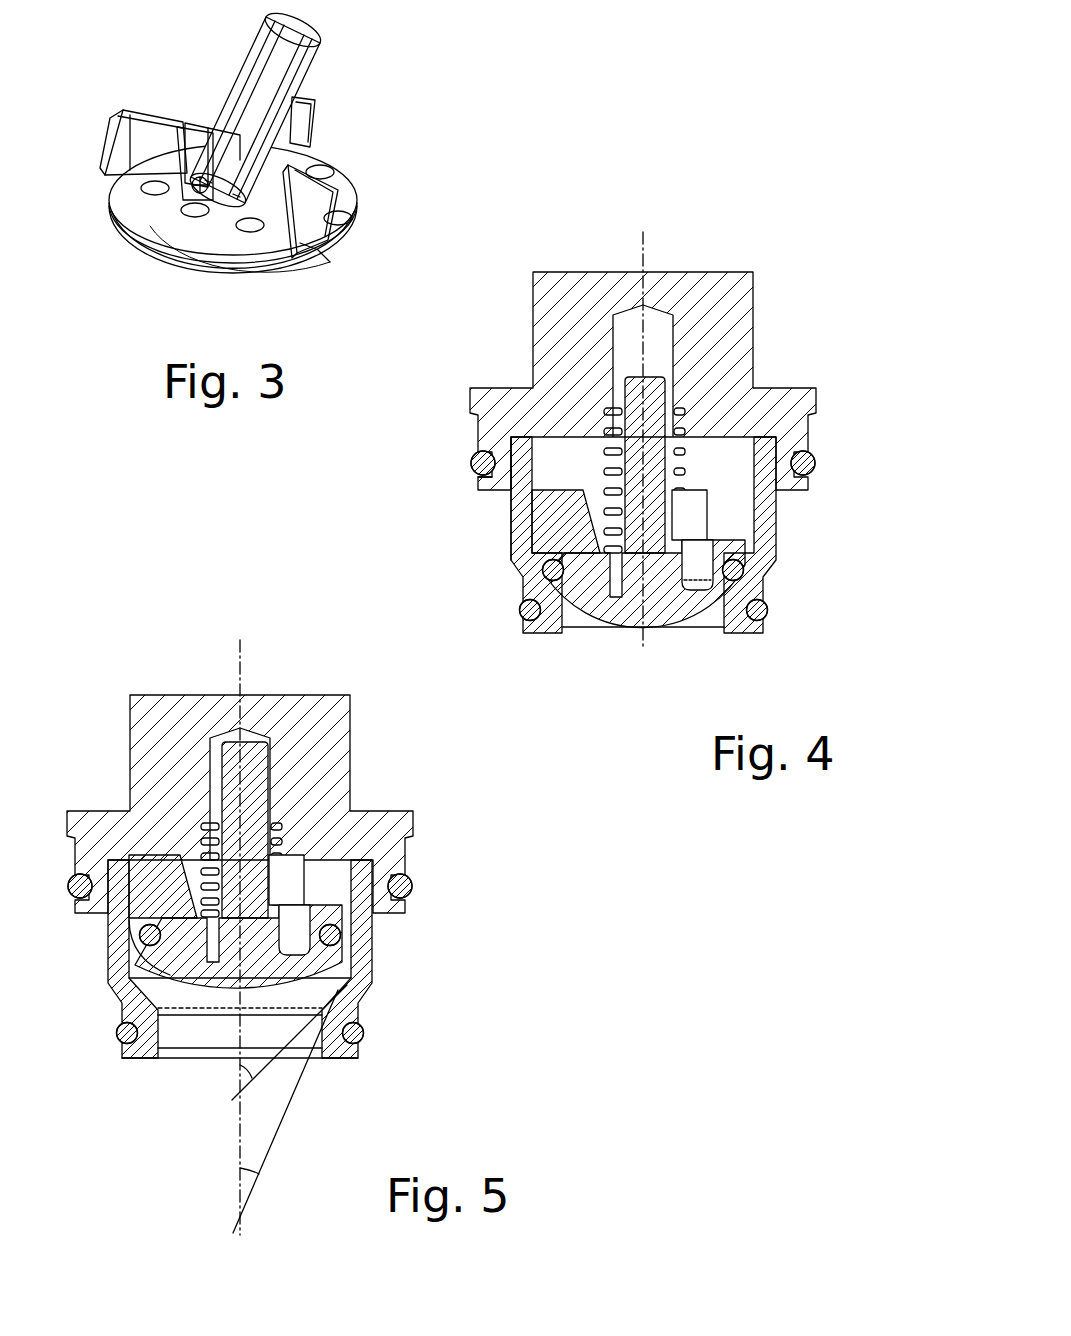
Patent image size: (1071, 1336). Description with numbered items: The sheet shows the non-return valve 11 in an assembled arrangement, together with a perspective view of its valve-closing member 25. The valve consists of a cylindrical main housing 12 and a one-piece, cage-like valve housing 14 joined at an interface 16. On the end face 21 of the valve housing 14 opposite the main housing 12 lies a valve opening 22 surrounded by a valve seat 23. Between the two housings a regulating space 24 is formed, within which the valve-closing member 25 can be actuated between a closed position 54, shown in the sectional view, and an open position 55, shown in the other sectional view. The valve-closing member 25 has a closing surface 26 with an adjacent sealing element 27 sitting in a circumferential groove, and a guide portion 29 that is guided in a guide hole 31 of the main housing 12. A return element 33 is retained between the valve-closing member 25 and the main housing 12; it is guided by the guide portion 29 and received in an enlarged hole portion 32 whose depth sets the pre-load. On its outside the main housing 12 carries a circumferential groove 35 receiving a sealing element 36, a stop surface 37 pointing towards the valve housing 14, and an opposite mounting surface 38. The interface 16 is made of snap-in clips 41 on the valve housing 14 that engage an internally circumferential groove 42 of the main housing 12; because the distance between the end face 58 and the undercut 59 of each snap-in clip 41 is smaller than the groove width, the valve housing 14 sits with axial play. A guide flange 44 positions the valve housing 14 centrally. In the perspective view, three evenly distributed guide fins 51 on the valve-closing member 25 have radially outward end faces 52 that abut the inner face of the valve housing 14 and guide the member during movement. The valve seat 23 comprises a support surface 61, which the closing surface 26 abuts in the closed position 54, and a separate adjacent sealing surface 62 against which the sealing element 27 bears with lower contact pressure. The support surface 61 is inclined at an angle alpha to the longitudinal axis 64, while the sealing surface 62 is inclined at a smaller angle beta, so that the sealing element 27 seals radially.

In FIG. 4, the non-return valve 11 is at (760, 220).
In FIG. 5, the non-return valve 11 is at (150, 667).
In FIG. 4, the main housing 12 is at (774, 305).
In FIG. 5, the main housing 12 is at (367, 758).
In FIG. 4, the valve housing 14 is at (790, 540).
In FIG. 5, the valve housing 14 is at (386, 940).
In FIG. 4, the interface 16 is at (792, 492).
In FIG. 5, the interface 16 is at (380, 913).
In FIG. 4, the end face 21 is at (540, 636).
In FIG. 4, the valve opening 22 is at (716, 630).
In FIG. 4, the valve seat 23 is at (748, 592).
In FIG. 4, the regulating space 24 is at (732, 482).
In FIG. 5, the regulating space 24 is at (336, 878).
In FIG. 3, the valve-closing member 25 is at (357, 137).
In FIG. 4, the valve-closing member 25 is at (636, 590).
In FIG. 5, the valve-closing member 25 is at (185, 958).
In FIG. 3, the closing surface 26 is at (200, 275).
In FIG. 4, the closing surface 26 is at (692, 618).
In FIG. 4, the sealing element 27 is at (546, 572).
In FIG. 5, the sealing element 27 is at (140, 933).
In FIG. 3, the guide portion 29 is at (300, 72).
In FIG. 4, the guide hole 31 is at (677, 356).
In FIG. 4, the hole portion 32 is at (595, 420).
In FIG. 5, the hole portion 32 is at (245, 830).
In FIG. 4, the return element 33 is at (606, 456).
In FIG. 5, the return element 33 is at (241, 870).
In FIG. 4, the groove 35 is at (476, 482).
In FIG. 4, the sealing element 36 is at (475, 460).
In FIG. 5, the sealing element 36 is at (410, 886).
In FIG. 4, the stop surface 37 is at (474, 496).
In FIG. 4, the mounting surface 38 is at (490, 382).
In FIG. 4, the snap-in clip 41 is at (792, 440).
In FIG. 4, the circumferential groove 42 is at (790, 447).
In FIG. 4, the guide flange 44 is at (517, 505).
In FIG. 3, the guide fins 51 is at (108, 124).
In FIG. 3, the end faces 52 is at (334, 240).
In FIG. 4, the closed position 54 is at (576, 622).
In FIG. 5, the open position 55 is at (140, 965).
In FIG. 4, the end face of the snap-in clip 58 is at (760, 440).
In FIG. 4, the undercut 59 is at (812, 460).
In FIG. 5, the support surface 61 is at (342, 992).
In FIG. 5, the sealing surface 62 is at (333, 978).
In FIG. 4, the longitudinal axis 64 is at (648, 242).
In FIG. 5, the longitudinal axis 64 is at (236, 665).